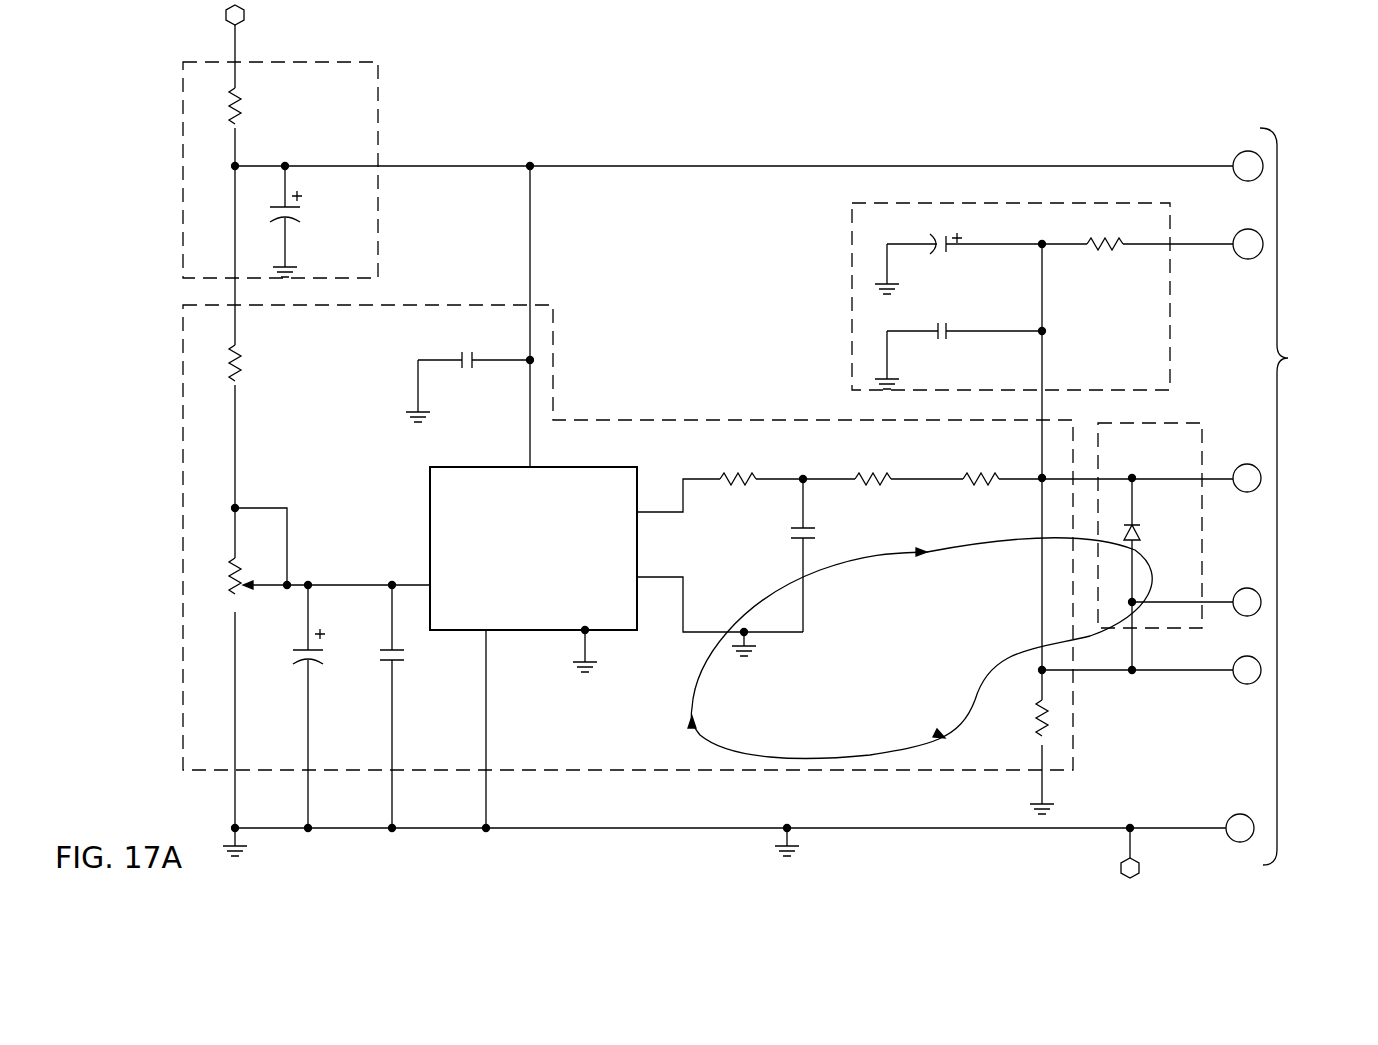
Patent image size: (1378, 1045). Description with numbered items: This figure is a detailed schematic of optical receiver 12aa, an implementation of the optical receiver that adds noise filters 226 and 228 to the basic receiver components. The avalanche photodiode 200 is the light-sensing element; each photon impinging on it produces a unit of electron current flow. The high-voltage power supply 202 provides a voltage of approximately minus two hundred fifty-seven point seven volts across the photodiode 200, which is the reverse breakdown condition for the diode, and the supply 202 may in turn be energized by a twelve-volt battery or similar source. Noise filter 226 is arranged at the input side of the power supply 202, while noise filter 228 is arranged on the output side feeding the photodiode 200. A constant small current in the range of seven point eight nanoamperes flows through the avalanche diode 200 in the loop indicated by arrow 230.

The optical receiver 12aa is at (855, 85).
The noise filter 226 is at (300, 57).
The high-voltage power supply 202 is at (420, 302).
The noise filter 228 is at (1170, 331).
The avalanche photodiode 200 is at (1185, 420).
The arrow 230 is at (740, 752).